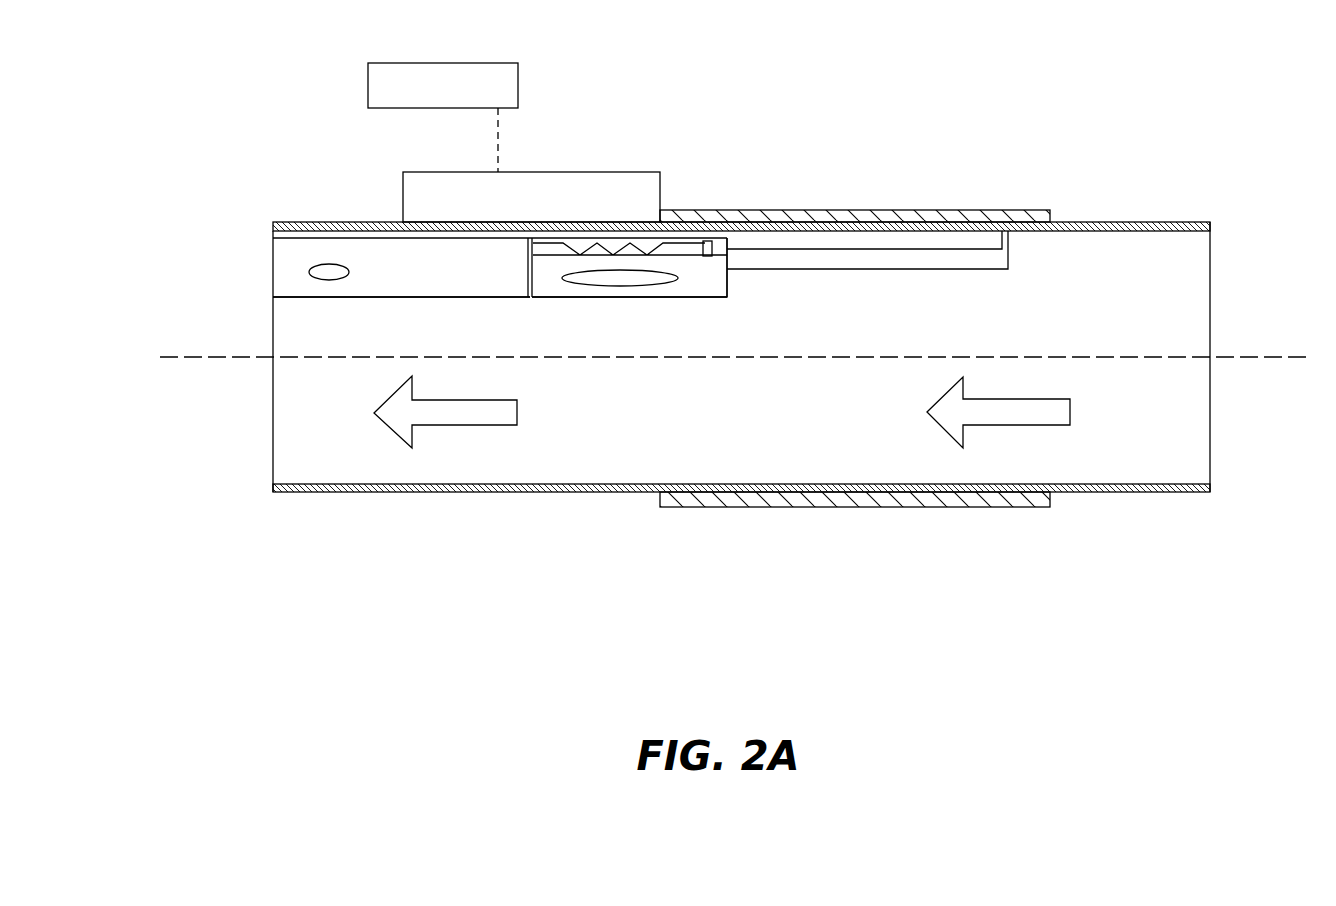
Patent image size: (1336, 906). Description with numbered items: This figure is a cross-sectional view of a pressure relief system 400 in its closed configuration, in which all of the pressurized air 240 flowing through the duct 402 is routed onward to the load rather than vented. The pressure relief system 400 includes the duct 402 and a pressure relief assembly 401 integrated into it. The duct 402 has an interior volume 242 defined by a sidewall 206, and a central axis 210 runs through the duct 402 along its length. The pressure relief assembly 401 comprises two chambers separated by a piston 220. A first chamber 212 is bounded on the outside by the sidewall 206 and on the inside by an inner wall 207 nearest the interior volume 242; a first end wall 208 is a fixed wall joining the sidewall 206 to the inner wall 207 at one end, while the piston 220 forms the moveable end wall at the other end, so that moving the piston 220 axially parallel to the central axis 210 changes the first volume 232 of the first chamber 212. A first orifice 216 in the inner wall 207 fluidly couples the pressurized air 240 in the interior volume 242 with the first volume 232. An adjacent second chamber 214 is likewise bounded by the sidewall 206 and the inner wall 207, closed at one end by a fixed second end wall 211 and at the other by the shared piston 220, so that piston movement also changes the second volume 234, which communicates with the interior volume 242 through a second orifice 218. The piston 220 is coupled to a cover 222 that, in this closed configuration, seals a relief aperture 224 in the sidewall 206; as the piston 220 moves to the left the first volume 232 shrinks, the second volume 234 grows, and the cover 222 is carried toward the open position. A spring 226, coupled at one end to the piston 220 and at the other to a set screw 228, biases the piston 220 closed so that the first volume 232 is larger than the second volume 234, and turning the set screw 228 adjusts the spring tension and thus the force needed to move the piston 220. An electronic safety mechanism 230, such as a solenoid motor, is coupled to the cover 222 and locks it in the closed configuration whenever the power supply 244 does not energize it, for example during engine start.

The pressure relief system 400 is at (133, 92).
The pressure relief assembly 401 is at (688, 135).
The power supply 244 is at (520, 86).
The electronic safety mechanism 230 is at (445, 190).
The sidewall 206 is at (373, 222).
The duct 402 is at (1177, 480).
The cover 222 is at (990, 210).
The relief aperture 224 is at (940, 235).
The inner wall 207 is at (285, 238).
The first end wall 208 is at (273, 279).
The first volume 232 is at (401, 277).
The first chamber 212 is at (448, 282).
The first orifice 216 is at (333, 278).
The piston 220 is at (533, 296).
The second volume 234 is at (629, 267).
The second chamber 214 is at (676, 290).
The second end wall 211 is at (733, 272).
The second orifice 218 is at (608, 278).
The spring 226 is at (657, 242).
The set screw 228 is at (710, 250).
The central axis 210 is at (1255, 355).
The interior volume 242 is at (750, 388).
The pressurized air 240 is at (1055, 410).